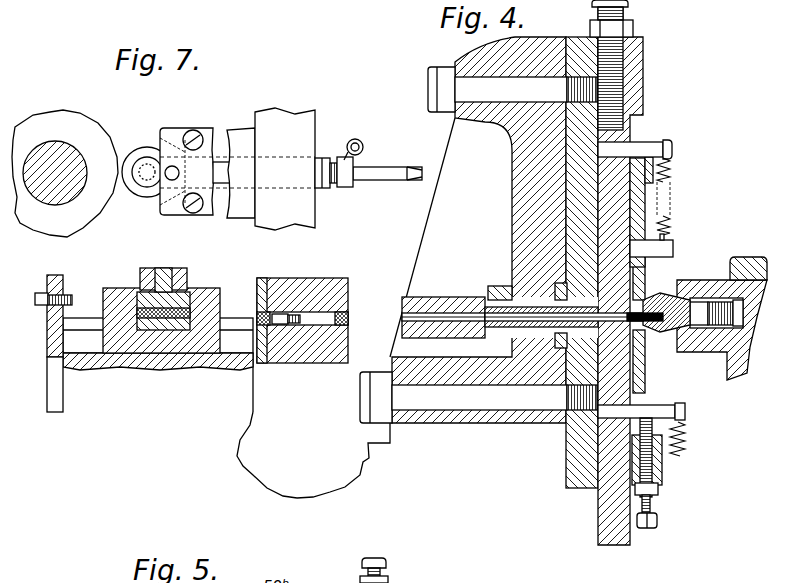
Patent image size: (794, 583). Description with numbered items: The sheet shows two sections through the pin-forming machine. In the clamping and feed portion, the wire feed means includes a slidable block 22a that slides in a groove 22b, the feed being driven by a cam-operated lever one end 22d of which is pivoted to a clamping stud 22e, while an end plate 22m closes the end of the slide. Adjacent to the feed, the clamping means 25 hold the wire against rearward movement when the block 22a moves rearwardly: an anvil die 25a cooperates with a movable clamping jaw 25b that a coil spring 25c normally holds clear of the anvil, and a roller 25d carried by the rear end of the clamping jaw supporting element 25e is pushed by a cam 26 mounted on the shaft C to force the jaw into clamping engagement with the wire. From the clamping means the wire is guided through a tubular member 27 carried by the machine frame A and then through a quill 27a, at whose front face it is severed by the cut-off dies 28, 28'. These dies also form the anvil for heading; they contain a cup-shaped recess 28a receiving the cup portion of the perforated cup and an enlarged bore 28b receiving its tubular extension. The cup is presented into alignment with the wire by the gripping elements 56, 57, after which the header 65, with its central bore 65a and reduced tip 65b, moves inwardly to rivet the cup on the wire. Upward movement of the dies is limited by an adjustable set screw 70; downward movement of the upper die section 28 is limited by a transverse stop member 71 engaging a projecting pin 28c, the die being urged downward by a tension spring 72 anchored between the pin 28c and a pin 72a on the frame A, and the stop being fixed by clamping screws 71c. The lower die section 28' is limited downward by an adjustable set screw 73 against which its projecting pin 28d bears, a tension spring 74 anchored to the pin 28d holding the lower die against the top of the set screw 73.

In FIG. 4, the machine frame A is at (431, 267).
In FIG. 7, the shaft C is at (64, 158).
In FIG. 7, the slidable block 22a is at (147, 340).
In FIG. 7, the groove 22b is at (240, 342).
In FIG. 7, the lever end 22d is at (193, 276).
In FIG. 7, the clamping stud 22e is at (163, 280).
In FIG. 7, the end plate 22m is at (63, 297).
In FIG. 7, the clamping means 25 is at (237, 169).
In FIG. 7, the anvil die 25a is at (413, 181).
In FIG. 7, the movable clamping jaw 25b is at (393, 156).
In FIG. 7, the coil spring 25c is at (357, 140).
In FIG. 7, the roller 25d is at (140, 146).
In FIG. 7, the clamping jaw supporting element 25e is at (190, 128).
In FIG. 7, the cam 26 is at (43, 113).
In FIG. 4, the tubular member 27 is at (446, 298).
In FIG. 4, the quill 27a is at (560, 312).
In FIG. 4, the upper cut-off die section 28 is at (668, 291).
In FIG. 4, the lower cut-off die section 28' is at (622, 302).
In FIG. 4, the cup-shaped recess 28a is at (556, 348).
In FIG. 4, the die bore 28b is at (600, 307).
In FIG. 4, the projecting pin 28c is at (648, 141).
In FIG. 4, the projecting pin 28d is at (686, 412).
In FIG. 4, the gripping element 56 is at (647, 286).
In FIG. 4, the gripping element 57 is at (666, 363).
In FIG. 4, the header 65 is at (668, 293).
In FIG. 4, the central bore 65a is at (657, 333).
In FIG. 4, the reduced tip 65b is at (640, 302).
In FIG. 4, the adjustable set screw 70 is at (612, 58).
In FIG. 4, the transverse stop member 71 is at (667, 204).
In FIG. 5, the clamping screws 71c is at (352, 578).
In FIG. 4, the tension spring 72 is at (670, 226).
In FIG. 4, the pin 72a is at (672, 246).
In FIG. 4, the adjustable set screw 73 is at (644, 473).
In FIG. 4, the tension spring 74 is at (686, 445).